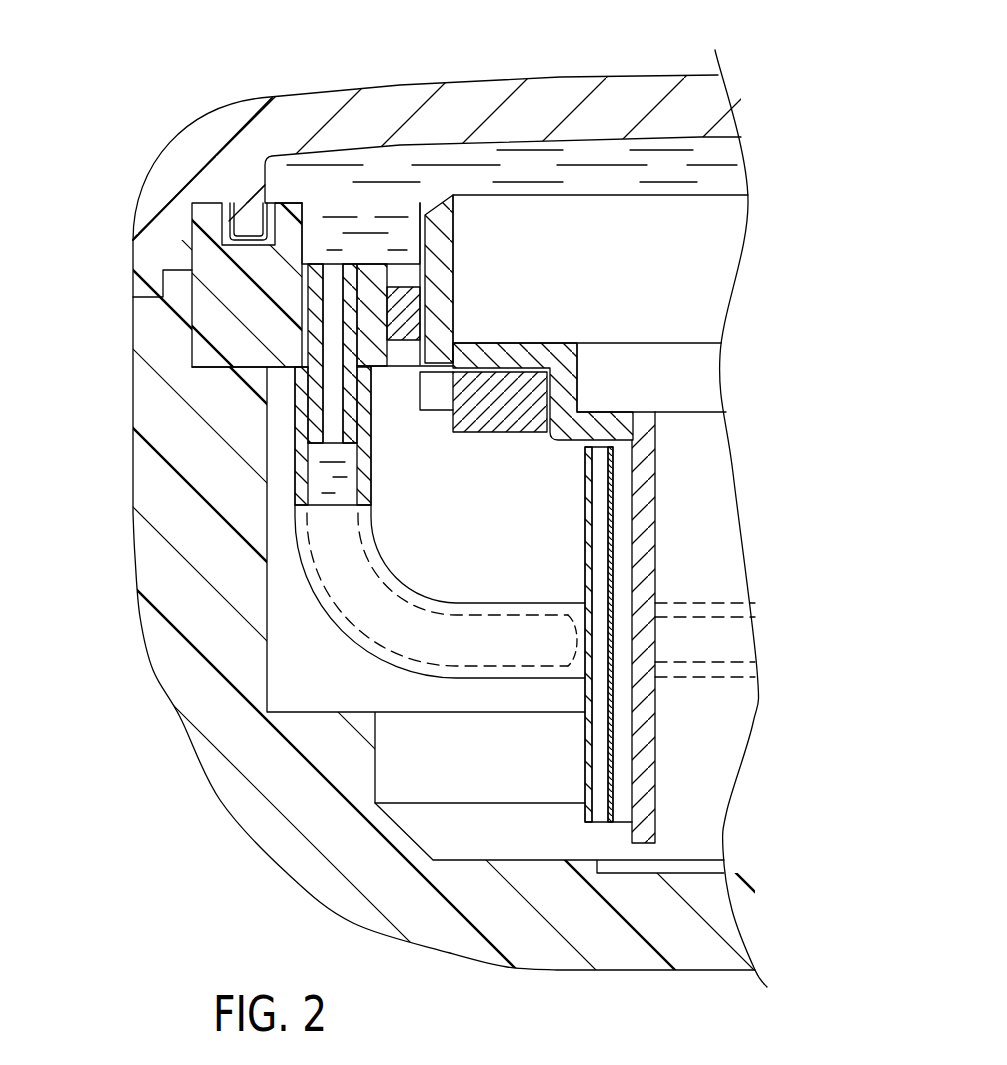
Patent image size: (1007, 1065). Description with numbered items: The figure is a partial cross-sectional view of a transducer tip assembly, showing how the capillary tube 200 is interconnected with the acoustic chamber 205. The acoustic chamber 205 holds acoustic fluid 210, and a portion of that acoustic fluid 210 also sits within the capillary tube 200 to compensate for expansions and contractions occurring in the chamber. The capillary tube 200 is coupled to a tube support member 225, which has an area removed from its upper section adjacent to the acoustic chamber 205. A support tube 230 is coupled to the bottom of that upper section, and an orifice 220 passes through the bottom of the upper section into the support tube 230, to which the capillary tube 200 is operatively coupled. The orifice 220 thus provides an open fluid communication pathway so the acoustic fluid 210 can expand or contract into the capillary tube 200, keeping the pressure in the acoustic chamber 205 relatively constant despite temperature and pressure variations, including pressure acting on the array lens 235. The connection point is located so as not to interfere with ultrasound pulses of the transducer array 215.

The capillary tube 200 is at (358, 612).
The acoustic chamber 205 is at (723, 152).
The acoustic fluid 210 is at (447, 178).
The transducer array 215 is at (693, 268).
The orifice 220 is at (330, 262).
The tube support member 225 is at (242, 328).
The support tube 230 is at (316, 392).
The array lens 235 is at (628, 97).